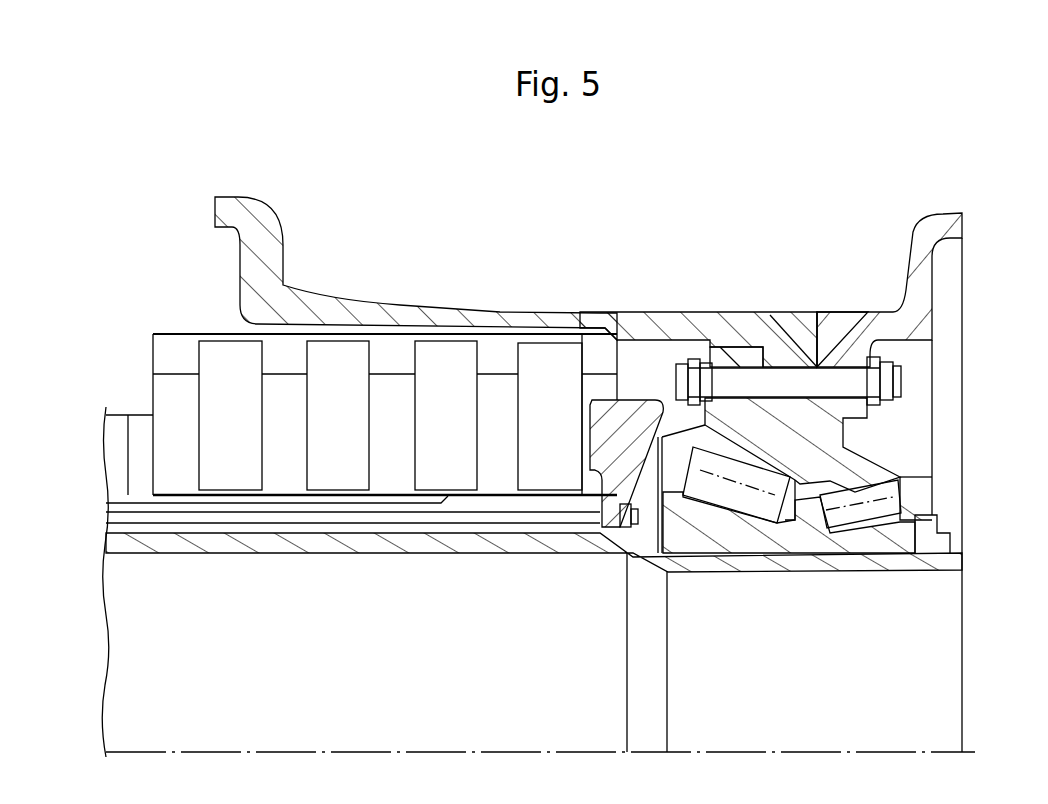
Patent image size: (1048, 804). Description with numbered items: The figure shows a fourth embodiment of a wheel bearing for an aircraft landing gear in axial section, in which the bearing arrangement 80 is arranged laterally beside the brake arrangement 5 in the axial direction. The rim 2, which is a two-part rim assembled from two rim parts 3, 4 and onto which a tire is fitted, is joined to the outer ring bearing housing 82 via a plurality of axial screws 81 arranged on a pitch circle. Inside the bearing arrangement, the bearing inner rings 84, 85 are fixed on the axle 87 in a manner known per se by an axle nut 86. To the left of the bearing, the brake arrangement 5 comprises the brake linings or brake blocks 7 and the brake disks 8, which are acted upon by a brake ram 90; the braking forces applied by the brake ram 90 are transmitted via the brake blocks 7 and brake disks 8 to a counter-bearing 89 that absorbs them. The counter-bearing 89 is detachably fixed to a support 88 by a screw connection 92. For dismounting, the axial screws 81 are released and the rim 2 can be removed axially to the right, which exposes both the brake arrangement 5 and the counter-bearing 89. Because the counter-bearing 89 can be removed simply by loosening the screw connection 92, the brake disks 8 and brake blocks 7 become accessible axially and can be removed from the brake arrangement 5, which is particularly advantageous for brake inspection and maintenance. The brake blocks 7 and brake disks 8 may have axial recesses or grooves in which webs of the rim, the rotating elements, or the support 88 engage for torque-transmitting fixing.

The rim 2 is at (643, 322).
The rim part 3 is at (498, 322).
The rim part 4 is at (846, 320).
The brake arrangement 5 is at (407, 278).
The brake linings/brake blocks 7 is at (180, 385).
The brake disks 8 is at (218, 362).
The bearing arrangement 80 is at (770, 286).
The axial screws 81 is at (910, 378).
The outer ring bearing housing 82 is at (843, 450).
The bearing inner ring 84 is at (760, 535).
The bearing inner ring 85 is at (885, 537).
The axle nut 86 is at (945, 540).
The axle 87 is at (390, 707).
The support 88 is at (510, 515).
The counter-bearing 89 is at (615, 545).
The brake ram 90 is at (138, 420).
The screw connection 92 is at (665, 568).